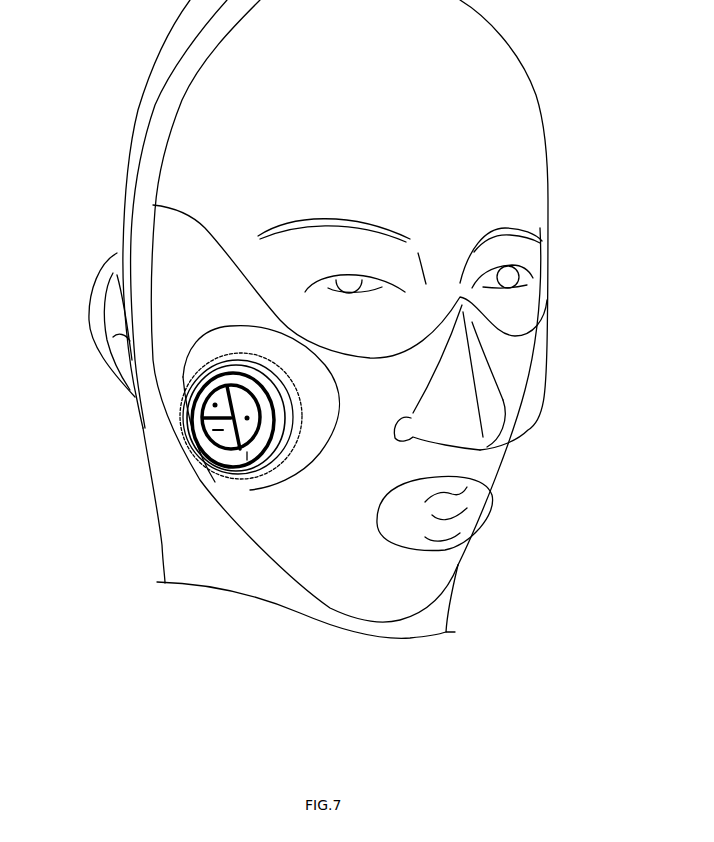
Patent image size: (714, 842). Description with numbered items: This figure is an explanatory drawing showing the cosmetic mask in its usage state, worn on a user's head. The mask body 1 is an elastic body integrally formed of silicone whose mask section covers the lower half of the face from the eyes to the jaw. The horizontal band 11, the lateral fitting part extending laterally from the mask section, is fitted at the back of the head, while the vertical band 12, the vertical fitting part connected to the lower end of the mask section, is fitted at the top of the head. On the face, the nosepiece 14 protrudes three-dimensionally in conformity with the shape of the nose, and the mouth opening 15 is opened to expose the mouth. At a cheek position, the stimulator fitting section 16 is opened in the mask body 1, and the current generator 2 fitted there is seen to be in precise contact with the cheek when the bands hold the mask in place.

The mask body 1 is at (163, 325).
The current generator 2 is at (247, 456).
The horizontal band 11 is at (118, 237).
The vertical band 12 is at (155, 140).
The nosepiece 14 is at (485, 384).
The mouth opening 15 is at (443, 552).
The stimulator fitting section 16 is at (290, 465).